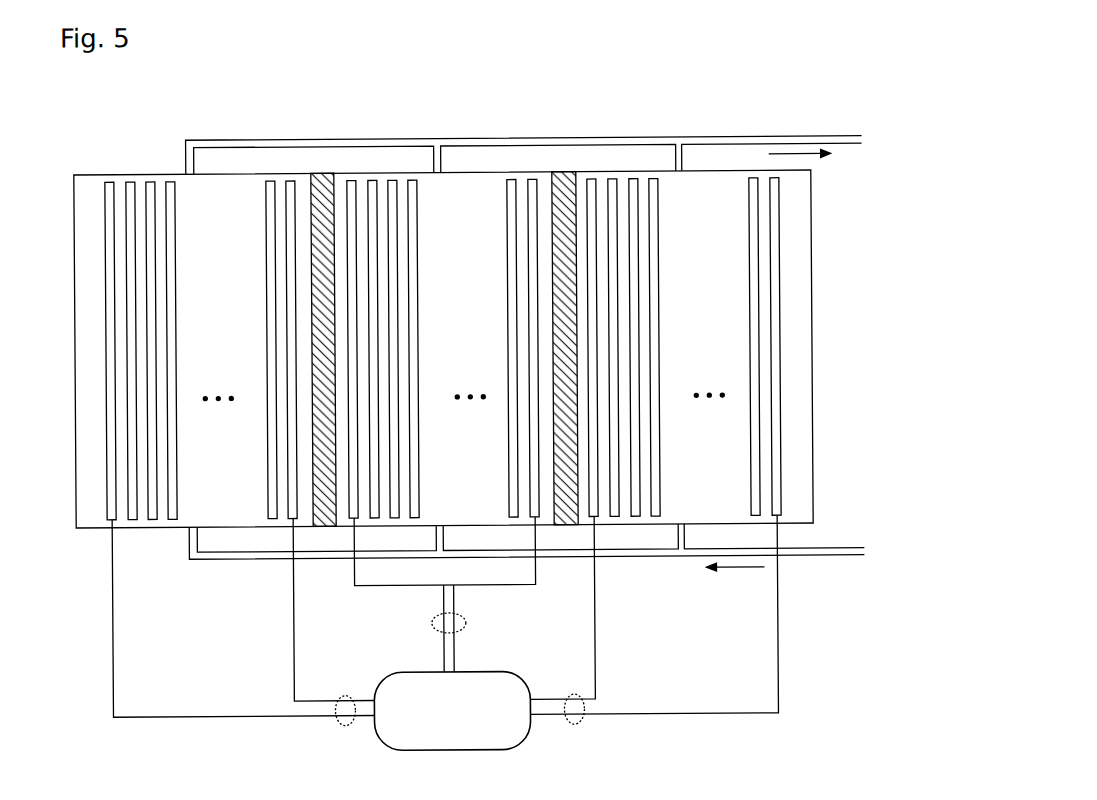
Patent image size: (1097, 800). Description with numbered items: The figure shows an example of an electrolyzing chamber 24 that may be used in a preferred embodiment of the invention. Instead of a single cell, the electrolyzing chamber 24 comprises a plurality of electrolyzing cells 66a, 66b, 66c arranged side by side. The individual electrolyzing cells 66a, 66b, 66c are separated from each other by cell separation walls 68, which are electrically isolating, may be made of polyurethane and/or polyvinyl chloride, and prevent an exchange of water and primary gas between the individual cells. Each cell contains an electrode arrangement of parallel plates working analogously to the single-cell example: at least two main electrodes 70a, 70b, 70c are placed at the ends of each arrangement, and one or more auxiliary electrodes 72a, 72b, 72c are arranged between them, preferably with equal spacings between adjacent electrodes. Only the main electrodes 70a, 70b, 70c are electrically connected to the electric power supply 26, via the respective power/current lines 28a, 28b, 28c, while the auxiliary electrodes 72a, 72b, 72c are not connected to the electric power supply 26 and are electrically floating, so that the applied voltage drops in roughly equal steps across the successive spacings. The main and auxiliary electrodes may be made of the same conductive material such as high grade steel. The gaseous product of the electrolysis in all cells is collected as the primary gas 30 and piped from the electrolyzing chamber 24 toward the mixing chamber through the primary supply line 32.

The electrolyzing chamber 24 is at (180, 112).
The electric power supply 26 is at (410, 678).
The power/current line 28a is at (345, 692).
The power/current line 28b is at (462, 622).
The power/current line 28c is at (572, 692).
The primary gas 30 is at (817, 140).
The primary supply line 32 is at (759, 137).
The electrolyzing cell 66a is at (227, 423).
The electrolyzing cell 66b is at (443, 387).
The electrolyzing cell 66c is at (694, 407).
The cell separation wall 68 is at (323, 183).
The main electrodes 70a is at (112, 498).
The main electrodes 70b is at (353, 237).
The main electrodes 70c is at (596, 234).
The auxiliary electrodes 72a is at (132, 313).
The auxiliary electrodes 72b is at (375, 310).
The auxiliary electrodes 72c is at (616, 308).